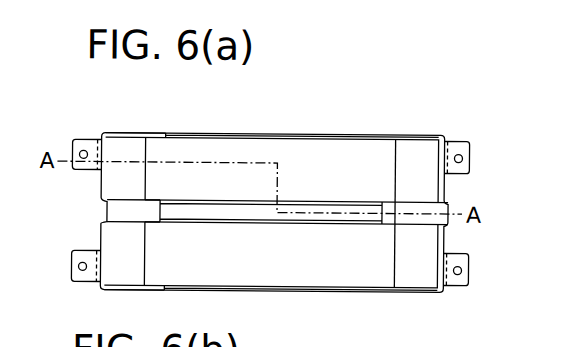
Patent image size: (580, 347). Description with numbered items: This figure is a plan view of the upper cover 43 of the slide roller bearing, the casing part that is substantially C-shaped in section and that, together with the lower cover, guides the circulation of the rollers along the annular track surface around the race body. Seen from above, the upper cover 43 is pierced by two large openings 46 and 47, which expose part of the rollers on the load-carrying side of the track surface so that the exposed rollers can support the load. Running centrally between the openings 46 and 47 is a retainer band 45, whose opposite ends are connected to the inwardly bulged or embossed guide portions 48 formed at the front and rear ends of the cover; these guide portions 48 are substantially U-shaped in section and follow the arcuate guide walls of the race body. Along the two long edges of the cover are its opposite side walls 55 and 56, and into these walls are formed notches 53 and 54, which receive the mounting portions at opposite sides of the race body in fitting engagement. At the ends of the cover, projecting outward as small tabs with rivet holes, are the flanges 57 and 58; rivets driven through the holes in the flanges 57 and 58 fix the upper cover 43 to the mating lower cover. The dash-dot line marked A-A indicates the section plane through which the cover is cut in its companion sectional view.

The upper cover 43 is at (99, 180).
The retainer band 45 is at (207, 212).
The opening 46 is at (363, 160).
The opening 47 is at (357, 265).
The guide portions 48 is at (122, 207).
The notch 53 is at (322, 134).
The notch 54 is at (308, 291).
The side wall 55 is at (125, 134).
The side wall 56 is at (133, 291).
The flange 57 is at (87, 141).
The flange 58 is at (460, 140).